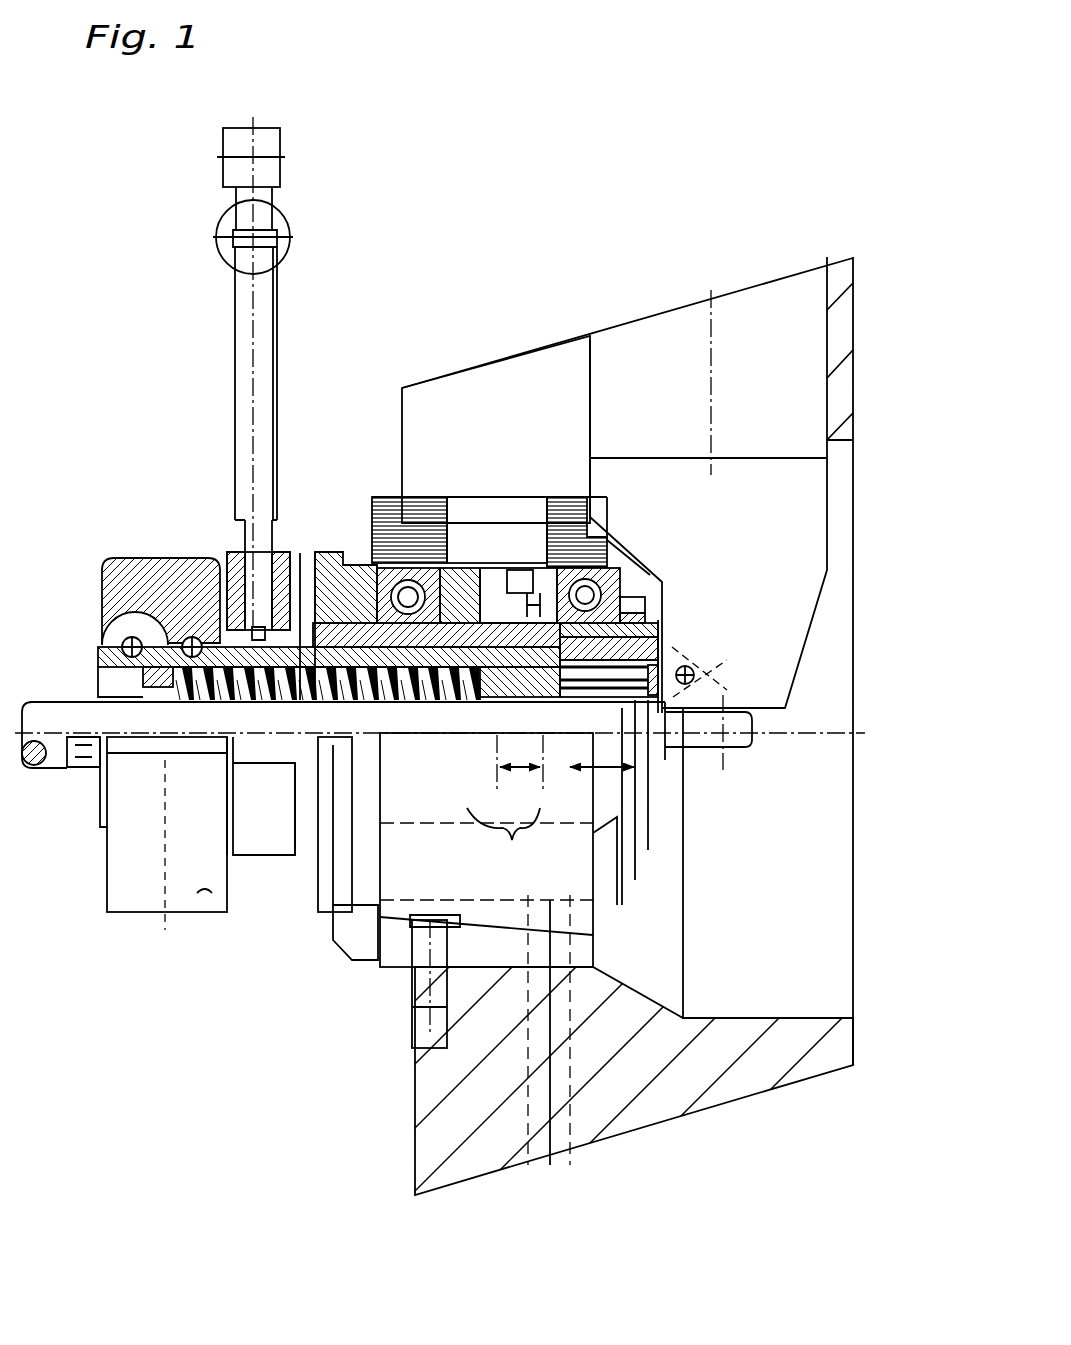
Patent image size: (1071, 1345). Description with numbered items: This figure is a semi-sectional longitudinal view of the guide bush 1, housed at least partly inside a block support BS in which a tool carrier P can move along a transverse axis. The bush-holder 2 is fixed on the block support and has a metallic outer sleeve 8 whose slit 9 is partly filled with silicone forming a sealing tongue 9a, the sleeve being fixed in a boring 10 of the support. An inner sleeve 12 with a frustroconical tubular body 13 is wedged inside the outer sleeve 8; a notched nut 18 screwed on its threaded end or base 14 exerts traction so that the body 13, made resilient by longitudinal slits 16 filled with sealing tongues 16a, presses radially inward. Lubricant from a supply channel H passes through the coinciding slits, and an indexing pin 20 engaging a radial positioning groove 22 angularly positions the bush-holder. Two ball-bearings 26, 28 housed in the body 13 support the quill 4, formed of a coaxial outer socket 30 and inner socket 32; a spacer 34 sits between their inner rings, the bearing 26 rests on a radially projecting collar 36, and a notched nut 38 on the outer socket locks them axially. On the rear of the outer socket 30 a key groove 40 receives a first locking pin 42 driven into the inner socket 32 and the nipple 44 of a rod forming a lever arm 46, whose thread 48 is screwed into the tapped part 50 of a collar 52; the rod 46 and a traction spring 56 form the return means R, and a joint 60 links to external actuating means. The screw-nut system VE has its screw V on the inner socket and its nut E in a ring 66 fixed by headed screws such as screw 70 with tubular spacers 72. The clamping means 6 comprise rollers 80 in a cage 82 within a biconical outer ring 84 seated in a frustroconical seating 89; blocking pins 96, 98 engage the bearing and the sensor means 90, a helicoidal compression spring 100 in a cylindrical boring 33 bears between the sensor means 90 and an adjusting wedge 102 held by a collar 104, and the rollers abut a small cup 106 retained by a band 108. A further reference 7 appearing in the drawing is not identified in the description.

The guide bush 1 is at (45, 372).
The bush-holder 2 is at (372, 398).
The quill 4 is at (45, 648).
The clamping means 6 is at (514, 833).
The bolt 7 is at (549, 966).
The outer sleeve 8 is at (393, 497).
The slit 9 is at (603, 490).
The sealing tongue 9a is at (598, 470).
The boring 10 is at (548, 497).
The inner sleeve 12 is at (360, 457).
The tubular body 13 is at (378, 545).
The end or base 14 is at (345, 555).
The resilient slits 16 is at (605, 520).
The sealing tongues 16a is at (612, 530).
The notched nut 18 is at (318, 545).
The indexing pin 20 is at (410, 950).
The radial positioning groove 22 is at (415, 1000).
The ball-bearing 26 is at (470, 497).
The ball-bearing 28 is at (635, 575).
The outer socket 30 is at (510, 515).
The inner socket 32 is at (440, 695).
The cylindrical boring 33 is at (400, 700).
The spacer 34 is at (503, 497).
The radially projecting collar 36 is at (307, 613).
The notched nut 38 is at (668, 600).
The key groove 40 is at (278, 845).
The first locking pin 42 is at (335, 680).
The nipple 44 is at (277, 683).
The rod forming a lever arm 46 is at (268, 297).
The thread 48 is at (240, 527).
The tapped part 50 is at (227, 590).
The collar 52 is at (277, 843).
The traction spring 56 is at (283, 248).
The joint 60 is at (270, 138).
The ring 66 is at (197, 893).
The headed screw 70 is at (163, 853).
The spacers 72 is at (320, 705).
The rollers 80 is at (562, 700).
The cage 82 is at (490, 698).
The outer ring 84 is at (630, 745).
The seating 89 is at (487, 700).
The sensor means 90 is at (503, 805).
The second rotation blocking pin 96 is at (667, 623).
The third rotation blocking pin 98 is at (480, 570).
The helicoidal compression spring 100 is at (197, 680).
The adjusting wedge 102 is at (150, 682).
The collar 104 is at (97, 680).
The small cup 106 is at (710, 680).
The band 108 is at (667, 637).